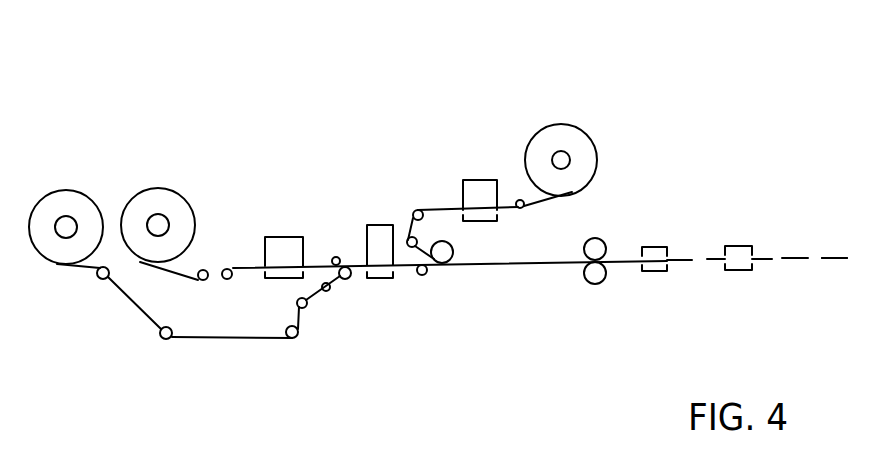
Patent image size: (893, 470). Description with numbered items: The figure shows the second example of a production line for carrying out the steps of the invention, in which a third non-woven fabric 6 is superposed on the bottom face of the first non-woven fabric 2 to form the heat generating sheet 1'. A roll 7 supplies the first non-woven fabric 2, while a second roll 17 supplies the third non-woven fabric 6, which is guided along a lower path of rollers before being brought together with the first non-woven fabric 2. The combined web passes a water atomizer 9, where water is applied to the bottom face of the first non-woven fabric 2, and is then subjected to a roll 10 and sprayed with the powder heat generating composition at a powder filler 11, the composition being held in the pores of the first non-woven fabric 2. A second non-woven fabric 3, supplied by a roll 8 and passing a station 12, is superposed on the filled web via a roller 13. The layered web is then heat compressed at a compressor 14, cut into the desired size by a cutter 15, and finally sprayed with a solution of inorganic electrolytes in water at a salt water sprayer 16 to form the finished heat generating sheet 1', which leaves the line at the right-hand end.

The second supply roll 17 is at (79, 171).
The roll 7 is at (173, 180).
The first non-woven fabric 2 is at (214, 228).
The third non-woven fabric 6 is at (198, 335).
The water atomizer 9 is at (302, 202).
The roll 10 is at (369, 328).
The powder filler 11 is at (411, 312).
The roller 13 is at (458, 304).
The processing unit 12 is at (468, 144).
The roll 8 is at (578, 108).
The second non-woven fabric 3 is at (520, 120).
The compressor 14 is at (620, 212).
The cutter 15 is at (675, 205).
The salt water sprayer 16 is at (764, 205).
The heat generating sheet 1' is at (818, 202).